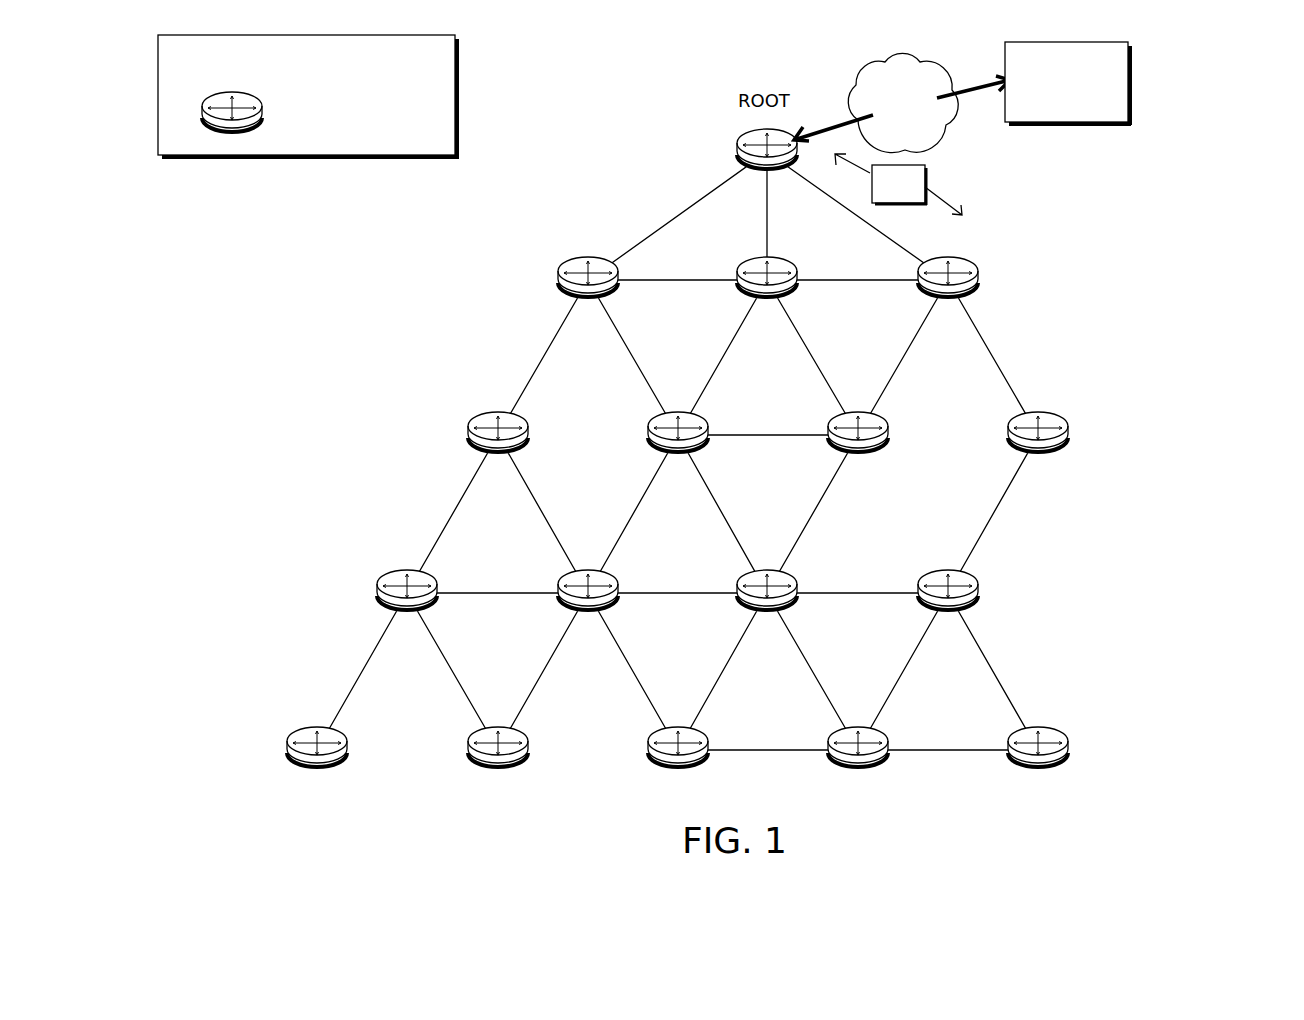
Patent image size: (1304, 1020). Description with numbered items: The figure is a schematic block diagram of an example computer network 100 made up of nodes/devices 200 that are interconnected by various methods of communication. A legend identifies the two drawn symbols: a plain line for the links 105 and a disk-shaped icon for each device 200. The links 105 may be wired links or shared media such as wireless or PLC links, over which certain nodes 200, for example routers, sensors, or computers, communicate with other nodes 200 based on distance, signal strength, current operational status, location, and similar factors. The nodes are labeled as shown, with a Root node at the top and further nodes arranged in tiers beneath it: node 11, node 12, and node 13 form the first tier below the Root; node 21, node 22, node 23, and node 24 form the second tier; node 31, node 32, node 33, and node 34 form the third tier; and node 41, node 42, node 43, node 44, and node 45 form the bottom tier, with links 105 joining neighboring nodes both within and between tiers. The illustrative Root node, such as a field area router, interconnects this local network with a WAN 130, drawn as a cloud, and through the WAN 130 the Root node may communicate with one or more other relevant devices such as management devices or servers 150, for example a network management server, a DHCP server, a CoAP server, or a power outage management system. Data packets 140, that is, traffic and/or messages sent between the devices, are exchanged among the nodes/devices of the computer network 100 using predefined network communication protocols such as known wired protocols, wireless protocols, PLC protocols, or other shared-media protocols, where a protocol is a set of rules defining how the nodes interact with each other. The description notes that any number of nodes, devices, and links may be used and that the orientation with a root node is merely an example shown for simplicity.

The computer network 100 is at (1226, 90).
The links 105 is at (191, 65).
The WAN 130 is at (889, 131).
The data packets 140 is at (885, 196).
The servers 150 is at (1052, 103).
The nodes/devices 200 is at (303, 113).
The node 11 is at (588, 296).
The node 12 is at (767, 296).
The node 13 is at (948, 296).
The node 21 is at (498, 451).
The node 22 is at (678, 451).
The node 23 is at (858, 451).
The node 24 is at (1038, 451).
The node 31 is at (407, 609).
The node 32 is at (588, 609).
The node 33 is at (767, 609).
The node 34 is at (948, 609).
The node 41 is at (317, 765).
The node 42 is at (498, 765).
The node 43 is at (678, 765).
The node 44 is at (858, 765).
The node 45 is at (1038, 765).